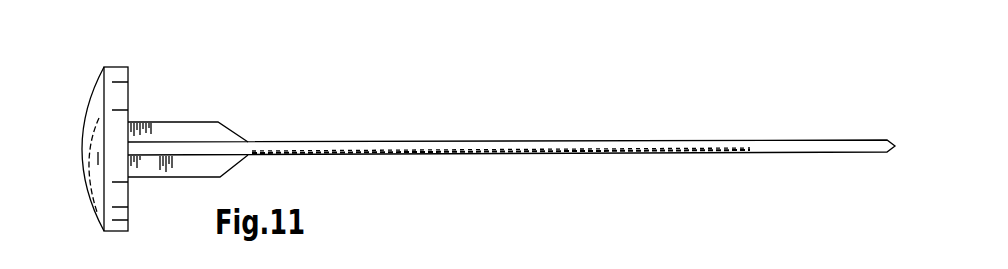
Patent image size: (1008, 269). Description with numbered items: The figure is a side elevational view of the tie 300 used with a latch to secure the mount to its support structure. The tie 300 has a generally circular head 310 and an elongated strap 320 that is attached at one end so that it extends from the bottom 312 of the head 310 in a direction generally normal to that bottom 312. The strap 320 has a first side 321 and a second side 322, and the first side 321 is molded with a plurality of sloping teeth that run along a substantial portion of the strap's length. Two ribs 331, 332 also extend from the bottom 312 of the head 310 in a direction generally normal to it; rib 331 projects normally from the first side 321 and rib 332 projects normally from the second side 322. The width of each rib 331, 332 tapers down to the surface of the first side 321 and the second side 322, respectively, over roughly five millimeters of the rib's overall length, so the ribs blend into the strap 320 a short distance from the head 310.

The tie 300 is at (524, 121).
The head 310 is at (95, 113).
The bottom of the head 312 is at (144, 99).
The strap 320 is at (825, 145).
The first side 321 is at (602, 159).
The second side 322 is at (364, 139).
The rib 331 is at (192, 167).
The rib 332 is at (208, 130).